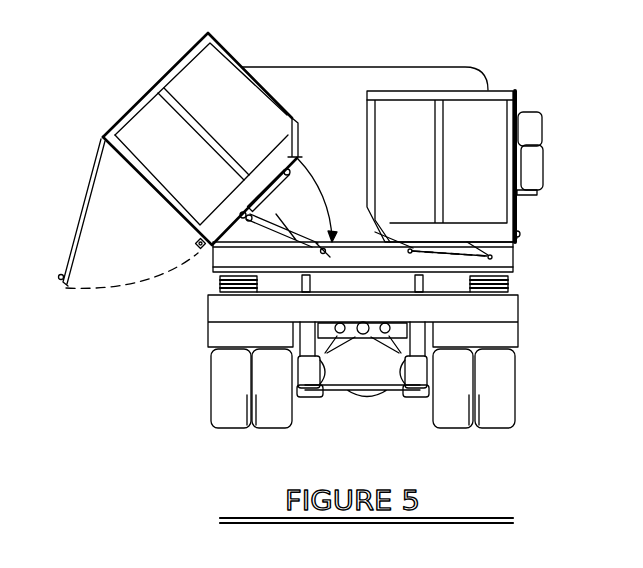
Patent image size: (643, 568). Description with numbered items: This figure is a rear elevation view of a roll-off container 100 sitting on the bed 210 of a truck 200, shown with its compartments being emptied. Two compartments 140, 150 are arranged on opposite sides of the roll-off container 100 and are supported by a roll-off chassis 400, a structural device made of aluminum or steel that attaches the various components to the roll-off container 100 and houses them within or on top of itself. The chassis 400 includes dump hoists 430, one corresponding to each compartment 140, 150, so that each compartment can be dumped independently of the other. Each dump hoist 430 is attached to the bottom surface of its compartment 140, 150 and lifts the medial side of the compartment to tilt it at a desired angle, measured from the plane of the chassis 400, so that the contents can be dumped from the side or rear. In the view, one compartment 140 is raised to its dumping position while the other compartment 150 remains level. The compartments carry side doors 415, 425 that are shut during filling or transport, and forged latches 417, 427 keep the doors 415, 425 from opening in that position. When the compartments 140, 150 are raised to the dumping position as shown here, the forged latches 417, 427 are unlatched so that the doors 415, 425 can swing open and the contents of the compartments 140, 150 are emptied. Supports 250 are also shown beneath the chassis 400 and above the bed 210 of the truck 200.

The roll-off container 100 is at (312, 97).
The compartment 140 is at (152, 95).
The compartment 150 is at (452, 107).
The truck 200 is at (203, 376).
The bed 210 is at (210, 313).
The support block 250 is at (219, 285).
The roll-off chassis 400 is at (212, 255).
The side door 415 is at (90, 193).
The forged latch 417 is at (194, 238).
The side door 425 is at (514, 171).
The forged latch 427 is at (523, 237).
The dump hoist 430 is at (278, 215).